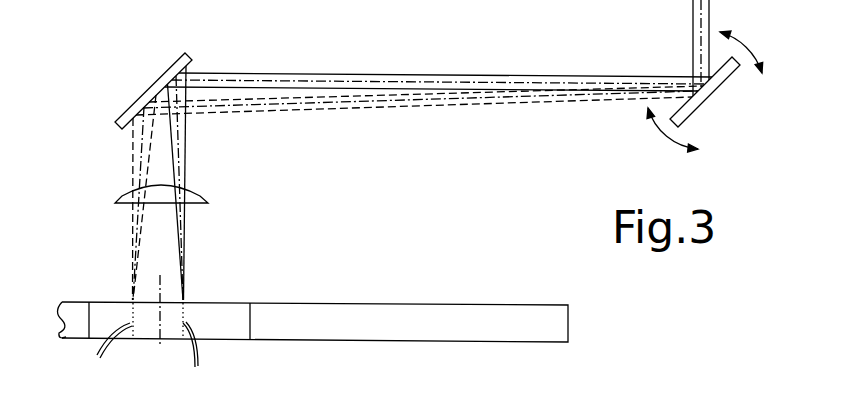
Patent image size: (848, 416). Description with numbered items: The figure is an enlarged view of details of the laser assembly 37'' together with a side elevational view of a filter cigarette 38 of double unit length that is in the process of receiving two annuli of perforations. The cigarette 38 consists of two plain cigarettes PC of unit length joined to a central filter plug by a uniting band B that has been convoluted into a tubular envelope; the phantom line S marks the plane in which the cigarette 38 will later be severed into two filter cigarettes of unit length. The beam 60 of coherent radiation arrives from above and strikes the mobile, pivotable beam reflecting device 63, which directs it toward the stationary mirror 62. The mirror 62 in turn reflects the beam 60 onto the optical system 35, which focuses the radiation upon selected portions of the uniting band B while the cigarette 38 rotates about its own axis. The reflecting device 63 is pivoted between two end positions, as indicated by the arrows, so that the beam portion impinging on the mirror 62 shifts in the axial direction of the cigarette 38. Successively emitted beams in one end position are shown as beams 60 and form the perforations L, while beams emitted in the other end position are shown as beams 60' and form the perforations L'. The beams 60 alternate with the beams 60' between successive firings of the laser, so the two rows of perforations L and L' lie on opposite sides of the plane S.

The laser assembly 37'' is at (96, 66).
The stationary mirror 62 is at (168, 65).
The beam reflecting device 63 is at (717, 82).
The beam of radiation 60 is at (438, 168).
The beam of radiation in alternate position 60' is at (393, 211).
The optical system 35 is at (203, 197).
The filter cigarette of double unit length 38 is at (340, 350).
The plain cigarette PC is at (75, 303).
The severing plane S is at (158, 343).
The perforations L is at (192, 357).
The perforations L' is at (110, 352).
The uniting band B is at (228, 342).